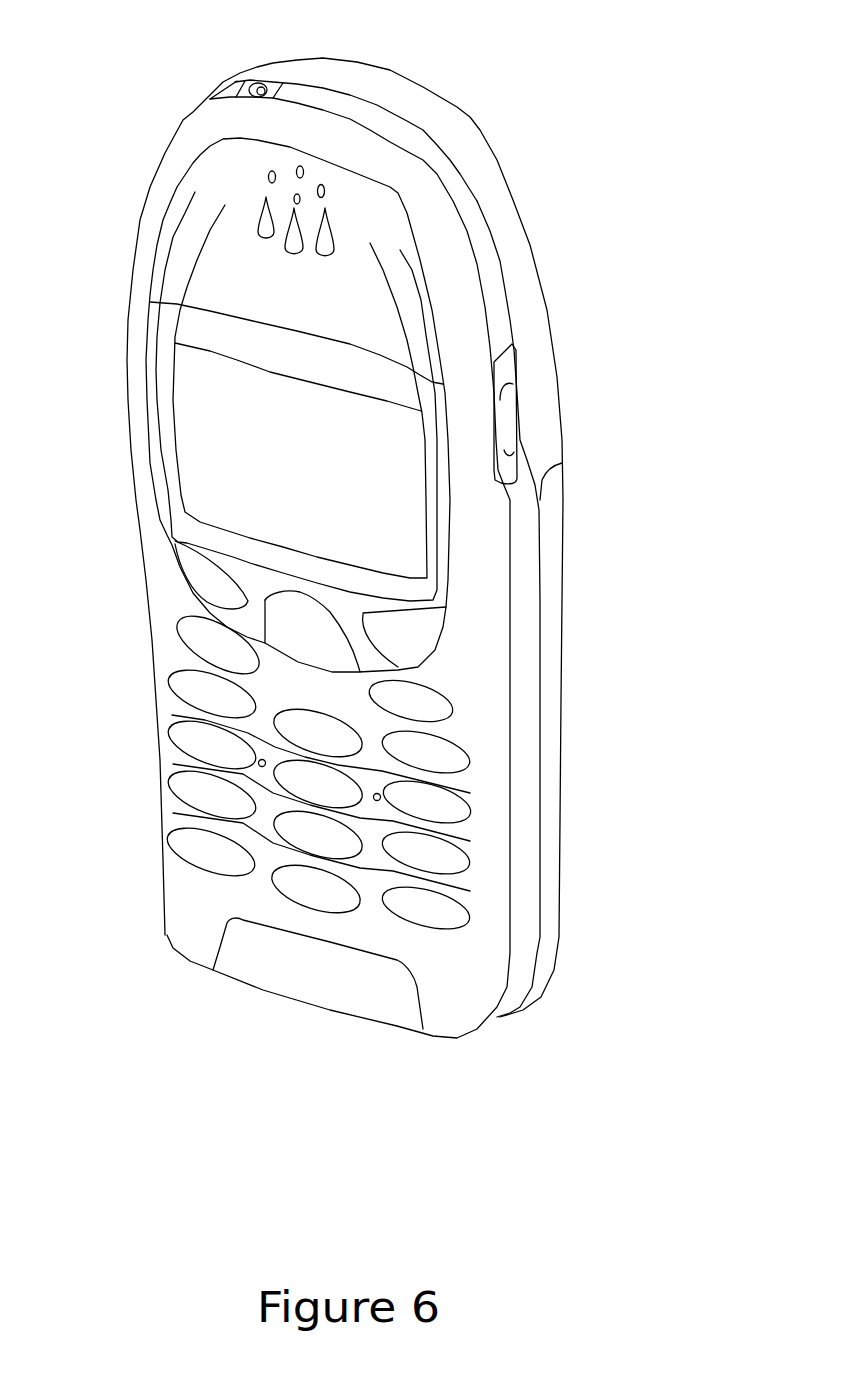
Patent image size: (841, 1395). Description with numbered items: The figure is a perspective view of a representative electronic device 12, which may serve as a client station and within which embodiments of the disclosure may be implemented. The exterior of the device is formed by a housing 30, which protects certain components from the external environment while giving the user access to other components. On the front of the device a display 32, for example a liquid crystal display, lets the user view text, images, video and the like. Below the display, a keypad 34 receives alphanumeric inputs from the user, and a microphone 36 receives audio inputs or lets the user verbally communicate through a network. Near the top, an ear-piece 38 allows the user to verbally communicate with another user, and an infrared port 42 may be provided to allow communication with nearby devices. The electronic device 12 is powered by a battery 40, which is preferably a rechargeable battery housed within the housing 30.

The electronic device 12 is at (360, 528).
The housing 30 is at (371, 537).
The display 32 is at (403, 403).
The keypad 34 is at (352, 823).
The microphone 36 is at (285, 973).
The ear-piece 38 is at (207, 196).
The battery 40 is at (564, 609).
The infrared port 42 is at (343, 101).